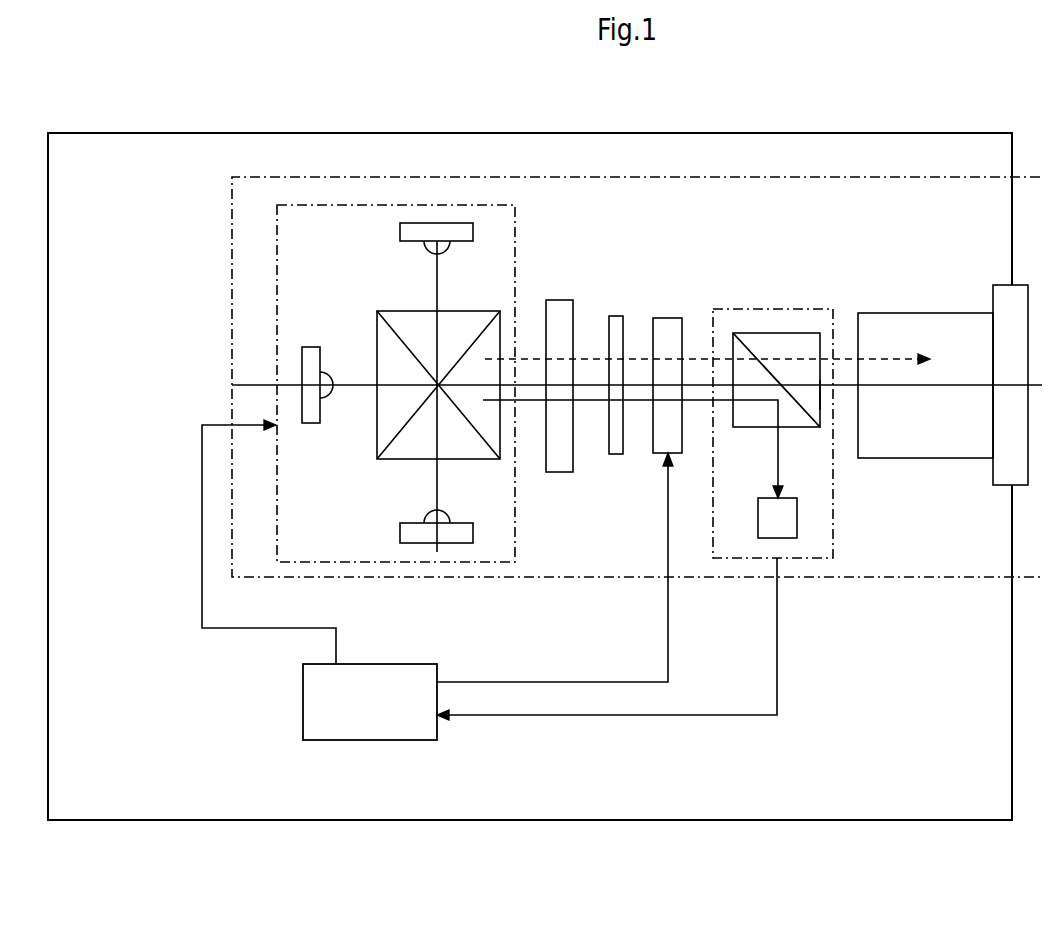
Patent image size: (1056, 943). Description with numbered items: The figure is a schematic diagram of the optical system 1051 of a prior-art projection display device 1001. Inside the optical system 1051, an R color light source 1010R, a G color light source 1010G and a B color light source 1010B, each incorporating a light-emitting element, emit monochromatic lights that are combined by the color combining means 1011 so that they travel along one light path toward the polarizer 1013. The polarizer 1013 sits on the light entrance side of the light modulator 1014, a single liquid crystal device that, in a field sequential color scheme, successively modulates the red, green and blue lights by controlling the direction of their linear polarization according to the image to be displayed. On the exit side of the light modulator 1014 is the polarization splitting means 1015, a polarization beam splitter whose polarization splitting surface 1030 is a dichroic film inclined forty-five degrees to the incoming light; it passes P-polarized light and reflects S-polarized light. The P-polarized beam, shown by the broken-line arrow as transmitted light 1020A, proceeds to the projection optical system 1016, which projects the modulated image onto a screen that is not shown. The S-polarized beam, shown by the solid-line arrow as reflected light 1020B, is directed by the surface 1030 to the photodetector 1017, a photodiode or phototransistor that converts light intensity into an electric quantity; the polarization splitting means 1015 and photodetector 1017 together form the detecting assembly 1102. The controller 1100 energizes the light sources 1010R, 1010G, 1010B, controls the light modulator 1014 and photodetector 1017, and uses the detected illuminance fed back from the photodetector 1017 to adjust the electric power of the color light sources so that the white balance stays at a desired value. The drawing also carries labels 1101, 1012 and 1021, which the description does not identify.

The projection display device 1001 is at (779, 133).
The optical system 1051 is at (679, 177).
The light source section 1101 is at (318, 563).
The detecting assembly 1102 is at (740, 560).
The controller 1100 is at (406, 664).
The R color light source 1010R is at (473, 232).
The G color light source 1010G is at (302, 372).
The B color light source 1010B is at (430, 544).
The color combining means 1011 is at (414, 311).
The lens 1012 is at (558, 473).
The polarizer 1013 is at (615, 316).
The light modulator 1014 is at (668, 318).
The polarization splitting means 1015 is at (775, 333).
The projection optical system 1016 is at (882, 313).
The photodetector 1017 is at (797, 528).
The polarization splitting surface 1030 is at (785, 395).
The transmitted light 1020A is at (873, 358).
The reflected light 1020B is at (778, 468).
The exit surface 1021 is at (823, 395).